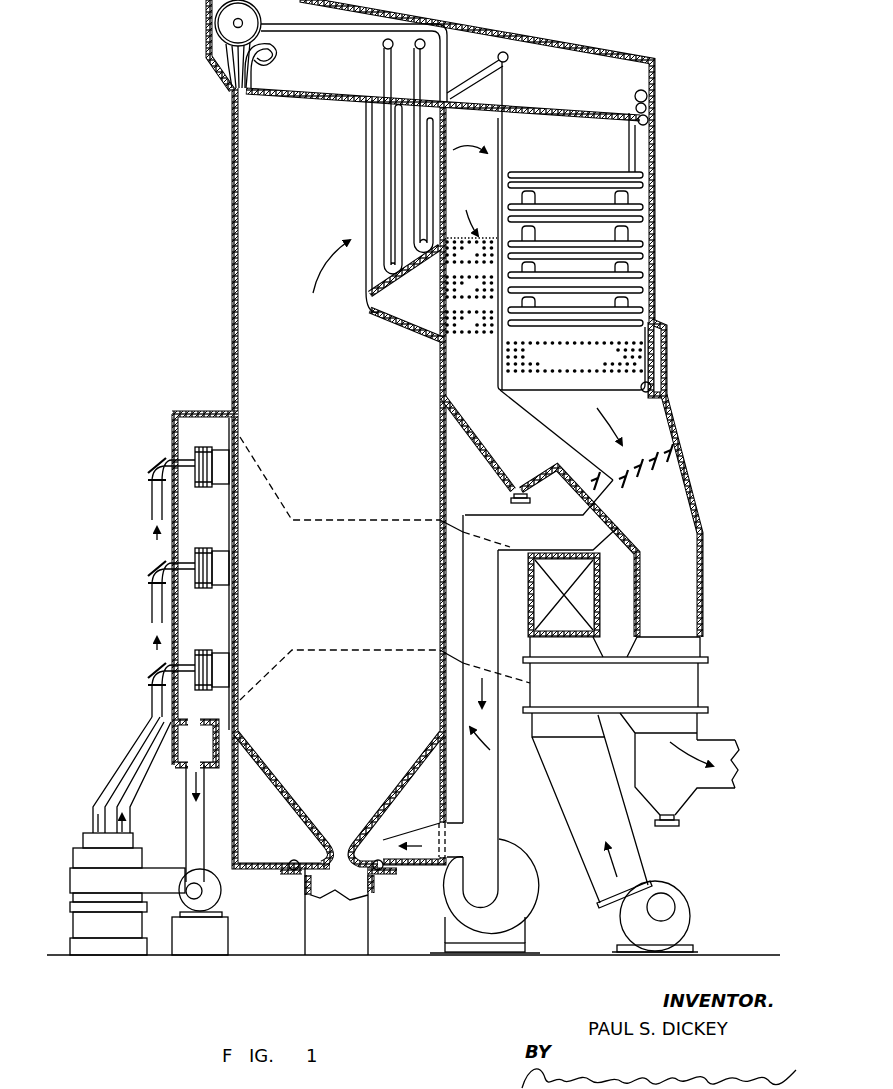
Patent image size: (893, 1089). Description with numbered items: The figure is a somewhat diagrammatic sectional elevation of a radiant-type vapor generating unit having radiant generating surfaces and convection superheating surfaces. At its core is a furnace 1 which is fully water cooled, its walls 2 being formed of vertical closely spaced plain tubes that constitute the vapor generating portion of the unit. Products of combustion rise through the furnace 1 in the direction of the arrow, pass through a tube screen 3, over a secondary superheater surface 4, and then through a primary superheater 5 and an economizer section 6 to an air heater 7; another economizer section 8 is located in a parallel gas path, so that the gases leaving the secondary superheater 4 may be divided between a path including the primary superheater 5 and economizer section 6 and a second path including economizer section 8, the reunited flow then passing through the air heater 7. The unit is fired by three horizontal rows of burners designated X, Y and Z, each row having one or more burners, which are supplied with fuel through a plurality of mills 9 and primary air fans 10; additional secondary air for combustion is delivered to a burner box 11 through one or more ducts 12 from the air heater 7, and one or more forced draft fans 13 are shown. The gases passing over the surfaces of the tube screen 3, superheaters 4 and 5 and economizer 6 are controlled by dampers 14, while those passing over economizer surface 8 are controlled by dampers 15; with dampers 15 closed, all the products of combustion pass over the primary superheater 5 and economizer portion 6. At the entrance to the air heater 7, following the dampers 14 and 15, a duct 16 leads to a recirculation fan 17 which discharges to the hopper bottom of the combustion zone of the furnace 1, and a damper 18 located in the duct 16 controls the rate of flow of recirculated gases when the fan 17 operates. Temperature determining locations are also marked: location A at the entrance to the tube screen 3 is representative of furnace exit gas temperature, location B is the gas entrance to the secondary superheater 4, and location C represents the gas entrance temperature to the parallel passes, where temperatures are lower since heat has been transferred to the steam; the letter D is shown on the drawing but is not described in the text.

The furnace 1 is at (345, 424).
The walls 2 is at (242, 351).
The tube screen 3 is at (364, 133).
The secondary superheater surface 4 is at (408, 156).
The primary superheater 5 is at (575, 249).
The economizer section 6 is at (575, 357).
The air heater 7 is at (615, 685).
The economizer section 8 is at (465, 336).
The mills 9 is at (127, 836).
The primary air fans 10 is at (223, 893).
The burner box 11 is at (193, 589).
The ducts 12 is at (333, 648).
The forced draft fans 13 is at (615, 832).
The dampers 14 is at (640, 470).
The dampers 15 is at (598, 487).
The duct 16 is at (498, 810).
The recirculation fan 17 is at (538, 886).
The damper 18 is at (541, 632).
The temperature determining location A is at (349, 180).
The temperature determining location B is at (377, 180).
The temperature determining location C is at (470, 191).
The air heater zone D is at (614, 357).
The burner row X is at (212, 670).
The burner row Y is at (212, 568).
The burner row Z is at (212, 467).